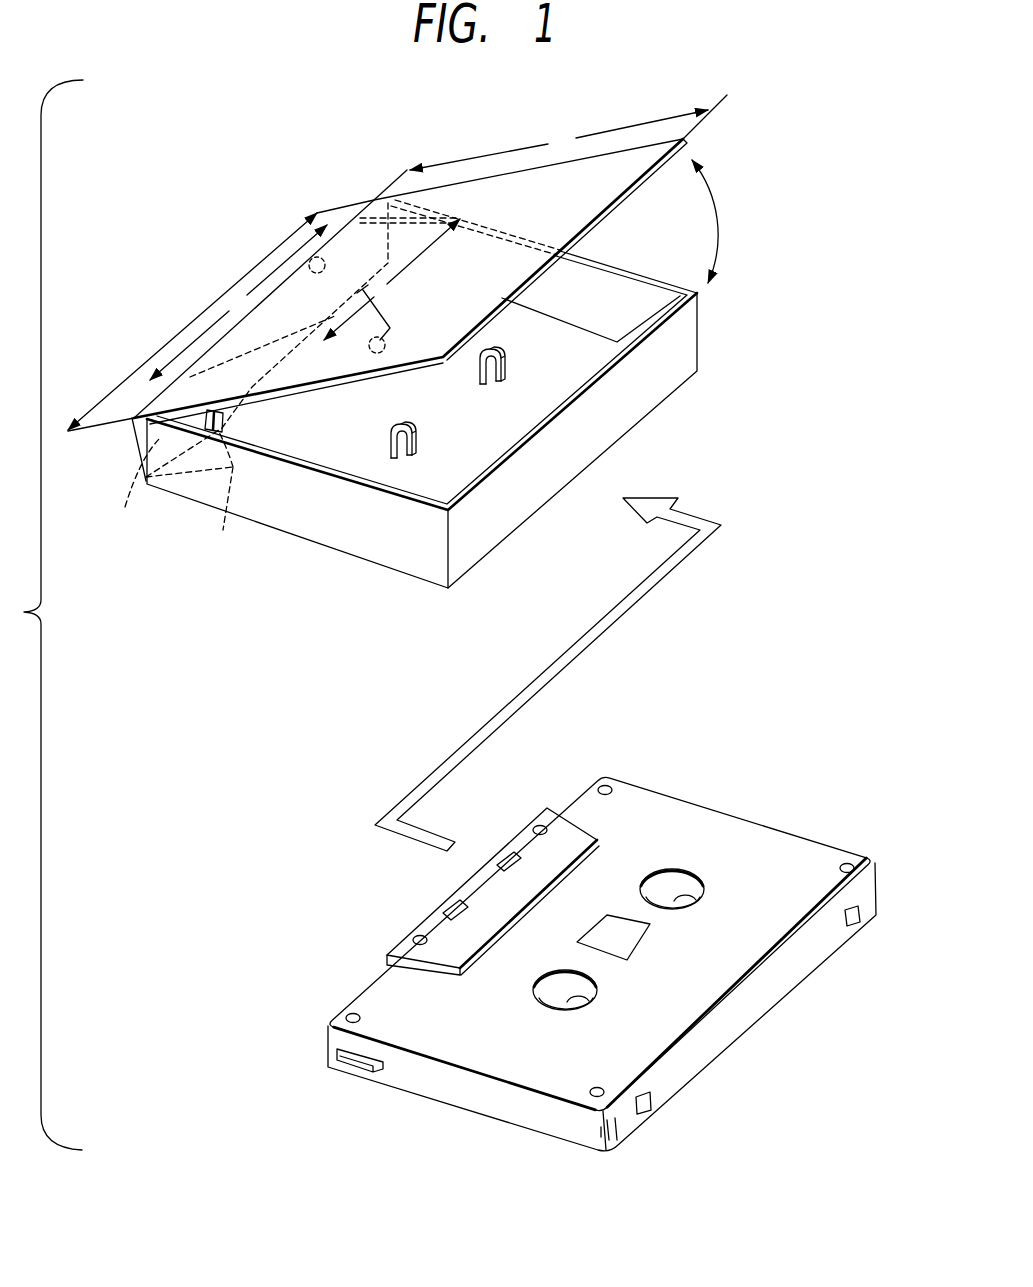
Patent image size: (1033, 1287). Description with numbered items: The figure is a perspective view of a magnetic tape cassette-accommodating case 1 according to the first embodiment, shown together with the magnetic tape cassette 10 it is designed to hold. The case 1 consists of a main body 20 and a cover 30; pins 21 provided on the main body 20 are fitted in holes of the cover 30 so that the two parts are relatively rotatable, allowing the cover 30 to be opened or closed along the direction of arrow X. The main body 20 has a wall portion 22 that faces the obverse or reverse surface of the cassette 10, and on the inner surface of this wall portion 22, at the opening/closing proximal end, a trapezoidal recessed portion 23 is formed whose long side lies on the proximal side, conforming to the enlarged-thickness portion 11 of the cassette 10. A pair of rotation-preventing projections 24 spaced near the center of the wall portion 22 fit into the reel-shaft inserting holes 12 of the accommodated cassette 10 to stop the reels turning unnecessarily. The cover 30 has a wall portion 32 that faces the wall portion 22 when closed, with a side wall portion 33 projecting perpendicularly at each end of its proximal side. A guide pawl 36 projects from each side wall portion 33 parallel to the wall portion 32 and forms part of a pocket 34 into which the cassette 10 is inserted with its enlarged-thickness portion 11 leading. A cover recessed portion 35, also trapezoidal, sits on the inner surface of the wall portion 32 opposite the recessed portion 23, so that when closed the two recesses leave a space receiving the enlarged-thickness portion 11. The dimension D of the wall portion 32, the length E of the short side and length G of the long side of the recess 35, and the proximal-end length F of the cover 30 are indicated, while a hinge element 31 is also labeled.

The magnetic tape cassette-accommodating case 1 is at (722, 162).
The magnetic tape cassette 10 is at (681, 795).
The enlarged-thickness portion 11 is at (472, 888).
The reel-shaft inserting holes 12 is at (703, 896).
The main body 20 is at (300, 538).
The pins 21 is at (145, 475).
The wall portion 22 is at (492, 428).
The recessed portion 23 is at (393, 340).
The rotation-preventing projections 24 is at (505, 360).
The cover 30 is at (598, 230).
The hinge portion of lid 31 is at (131, 488).
The wall portion 32 is at (565, 215).
The side wall portion 33 is at (133, 428).
The pocket 34 is at (231, 415).
The cover recessed portion 35 is at (305, 262).
The guide pawl 36 is at (224, 497).